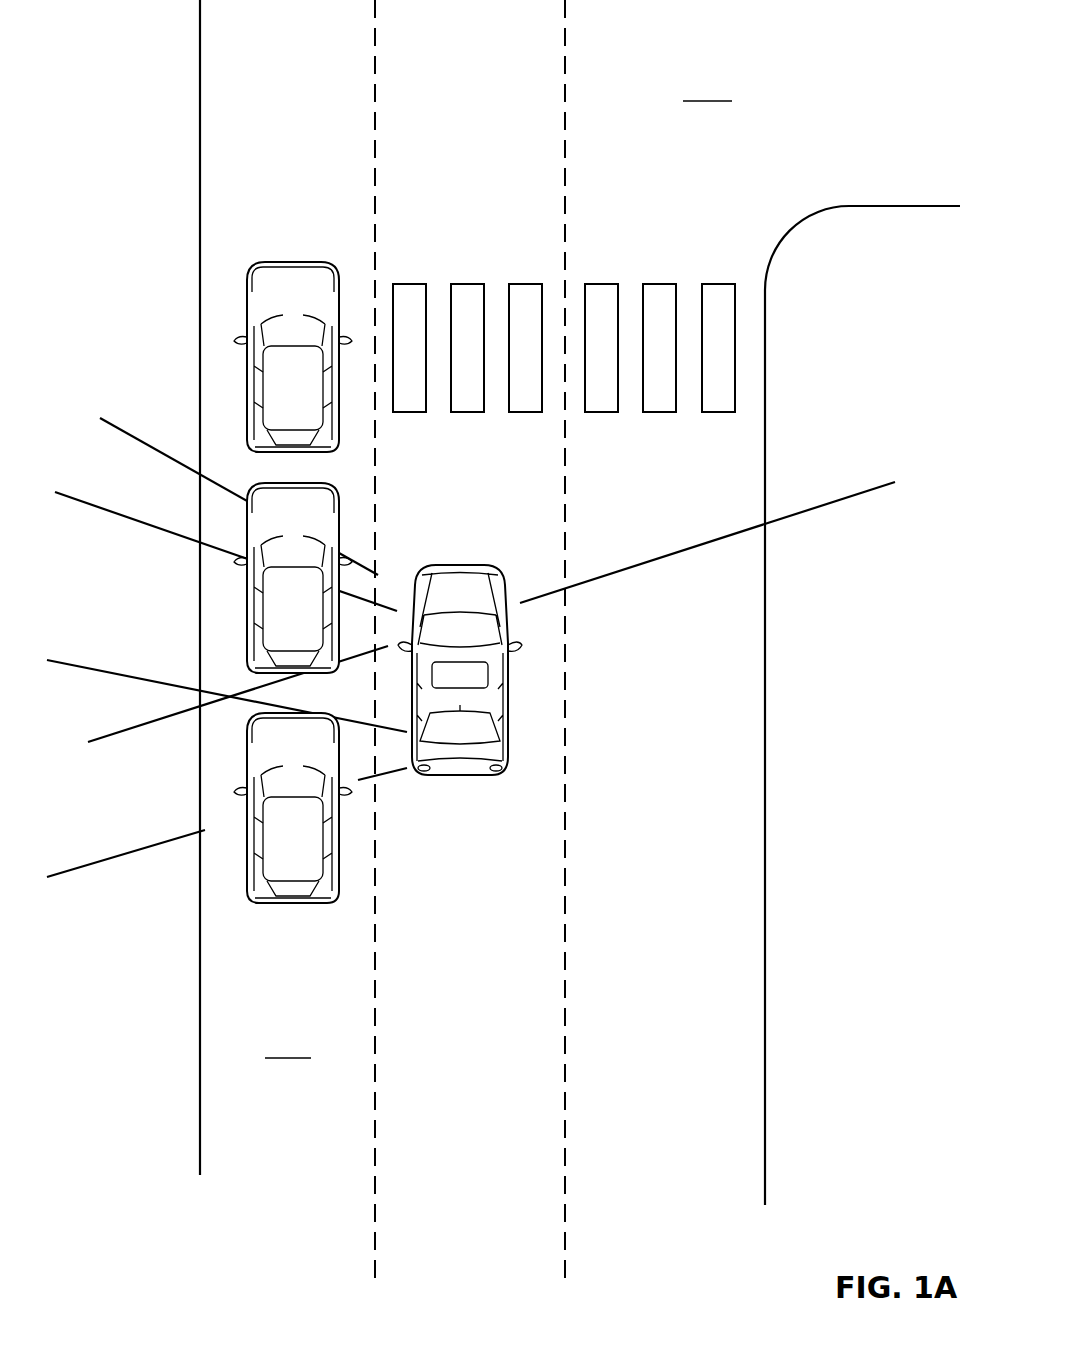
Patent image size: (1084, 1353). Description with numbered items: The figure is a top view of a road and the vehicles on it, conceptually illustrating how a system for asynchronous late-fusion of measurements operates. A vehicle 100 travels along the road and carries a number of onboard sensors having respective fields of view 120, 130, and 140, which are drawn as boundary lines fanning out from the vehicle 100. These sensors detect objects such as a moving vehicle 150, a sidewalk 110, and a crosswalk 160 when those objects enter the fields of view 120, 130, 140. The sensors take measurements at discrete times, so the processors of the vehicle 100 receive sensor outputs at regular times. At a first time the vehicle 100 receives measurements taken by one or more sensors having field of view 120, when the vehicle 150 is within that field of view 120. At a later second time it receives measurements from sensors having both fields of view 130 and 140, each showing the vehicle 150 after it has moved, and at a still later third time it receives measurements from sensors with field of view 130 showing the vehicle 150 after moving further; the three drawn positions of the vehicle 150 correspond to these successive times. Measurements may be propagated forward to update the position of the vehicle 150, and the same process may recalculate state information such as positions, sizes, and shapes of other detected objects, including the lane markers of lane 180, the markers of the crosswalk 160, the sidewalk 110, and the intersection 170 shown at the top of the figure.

The vehicle 100 is at (482, 776).
The sidewalk 110 is at (200, 173).
The field of view 120 is at (73, 663).
The field of view 130 is at (75, 497).
The field of view 140 is at (115, 422).
The moving vehicle 150 is at (293, 619).
The crosswalk 160 is at (657, 412).
The intersection 170 is at (708, 88).
The lane 180 is at (290, 1045).